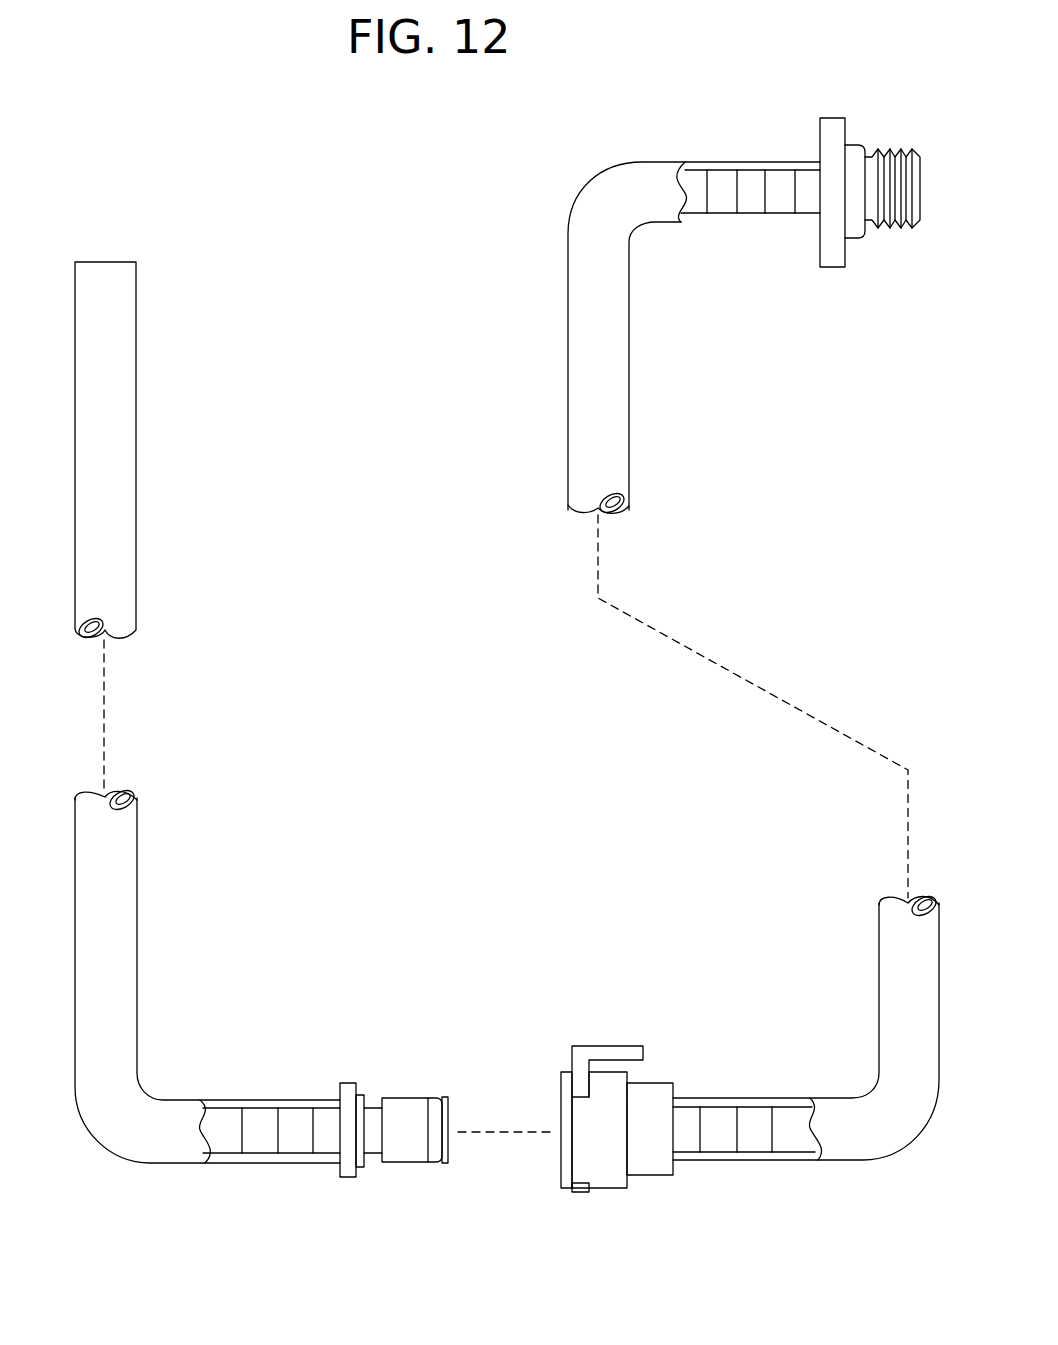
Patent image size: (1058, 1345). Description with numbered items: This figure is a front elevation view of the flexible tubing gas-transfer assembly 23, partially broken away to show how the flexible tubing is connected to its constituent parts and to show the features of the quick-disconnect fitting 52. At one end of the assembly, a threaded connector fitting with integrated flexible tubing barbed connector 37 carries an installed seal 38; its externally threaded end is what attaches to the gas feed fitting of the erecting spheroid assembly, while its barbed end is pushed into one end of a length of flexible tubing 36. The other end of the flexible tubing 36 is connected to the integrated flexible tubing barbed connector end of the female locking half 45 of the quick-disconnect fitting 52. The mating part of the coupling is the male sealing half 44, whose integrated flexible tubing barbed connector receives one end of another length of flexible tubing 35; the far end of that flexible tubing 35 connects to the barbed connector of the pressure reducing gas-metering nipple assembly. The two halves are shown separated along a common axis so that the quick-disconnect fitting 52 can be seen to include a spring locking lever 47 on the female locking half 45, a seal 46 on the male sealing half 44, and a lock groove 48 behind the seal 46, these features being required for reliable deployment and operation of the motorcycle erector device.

The flexible tubing gas-transfer assembly 23 is at (266, 165).
The flexible tubing 35 is at (136, 493).
The flexible tubing 36 is at (629, 372).
The threaded connector fitting with integrated flexible tubing barbed connector 37 is at (820, 150).
The seal 38 is at (863, 238).
The male sealing half 44 is at (352, 1178).
The female locking half 45 is at (607, 1188).
The seal 46 is at (435, 1098).
The spring locking lever 47 is at (610, 1046).
The lock groove 48 is at (368, 1147).
The quick-disconnect fitting 52 is at (512, 1068).